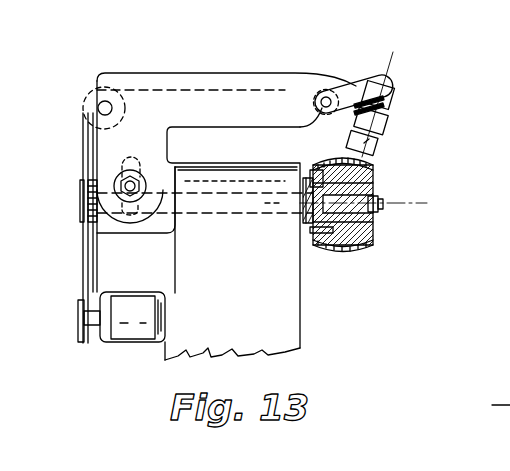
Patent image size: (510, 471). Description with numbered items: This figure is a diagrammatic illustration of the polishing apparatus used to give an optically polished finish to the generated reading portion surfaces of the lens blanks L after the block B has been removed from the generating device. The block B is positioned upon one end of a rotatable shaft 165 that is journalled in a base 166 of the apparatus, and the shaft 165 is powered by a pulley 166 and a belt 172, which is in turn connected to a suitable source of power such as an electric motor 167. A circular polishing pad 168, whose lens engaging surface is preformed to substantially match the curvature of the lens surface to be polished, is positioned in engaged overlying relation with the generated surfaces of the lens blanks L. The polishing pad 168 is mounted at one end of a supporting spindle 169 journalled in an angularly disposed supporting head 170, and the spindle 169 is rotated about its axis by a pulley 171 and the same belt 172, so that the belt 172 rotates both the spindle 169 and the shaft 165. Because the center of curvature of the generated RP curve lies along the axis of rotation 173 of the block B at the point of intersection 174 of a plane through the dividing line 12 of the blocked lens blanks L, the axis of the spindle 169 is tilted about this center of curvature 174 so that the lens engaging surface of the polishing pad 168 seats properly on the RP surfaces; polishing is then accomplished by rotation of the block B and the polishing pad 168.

The dividing line 12 is at (350, 250).
The rotatable shaft 165 is at (240, 215).
The base 166 is at (214, 172).
The electric motor 167 is at (125, 334).
The circular polishing pad 168 is at (357, 166).
The supporting spindle 169 is at (387, 137).
The supporting head 170 is at (353, 84).
The pulley 171 is at (393, 97).
The belt 172 is at (277, 90).
The axis of rotation 173 is at (403, 203).
The point of intersection 174 is at (378, 213).
The block B is at (368, 230).
The lens blanks L is at (323, 158).